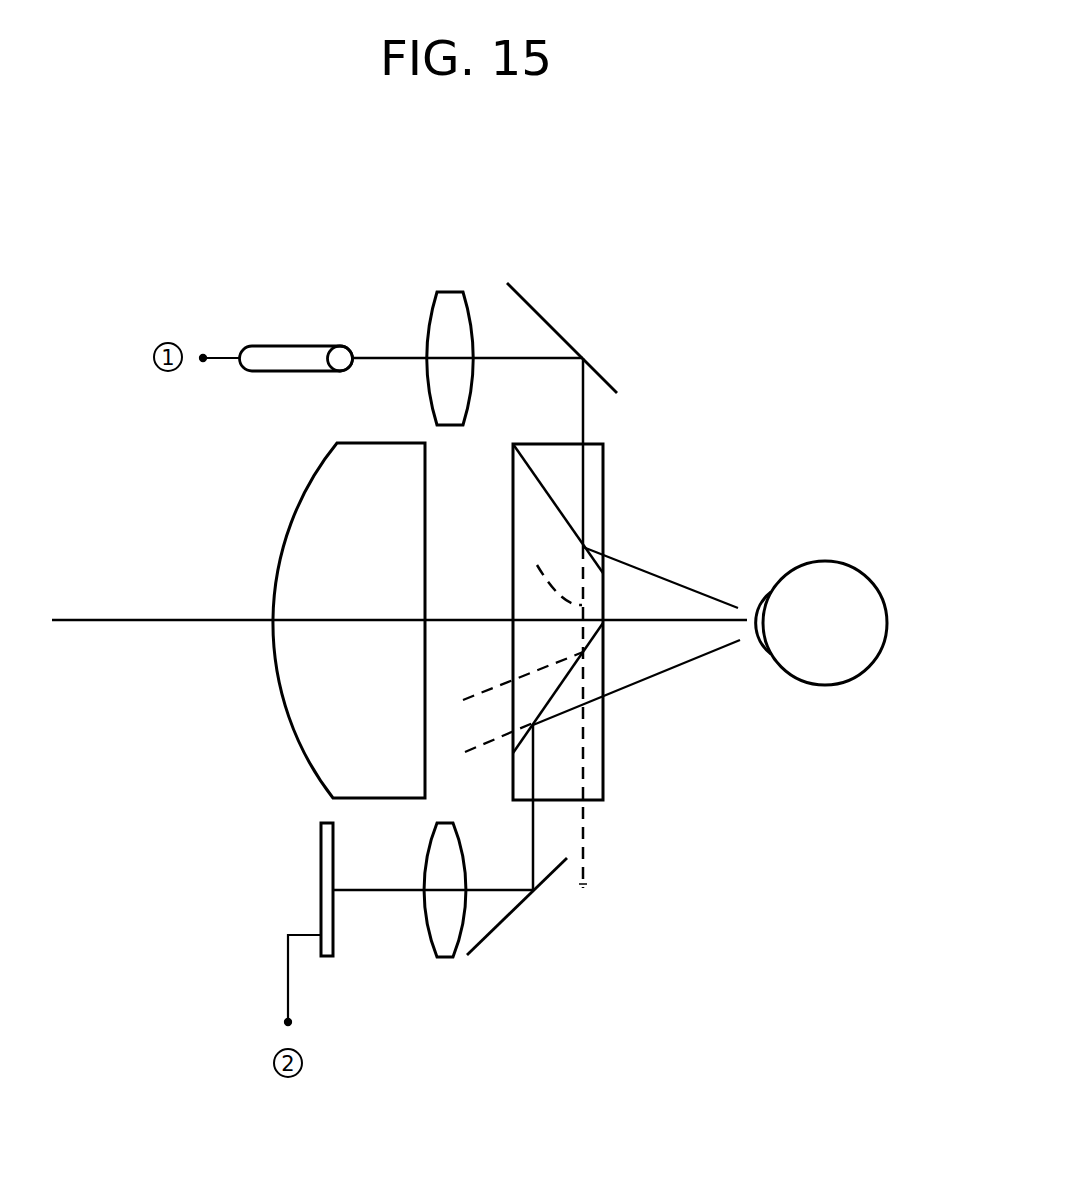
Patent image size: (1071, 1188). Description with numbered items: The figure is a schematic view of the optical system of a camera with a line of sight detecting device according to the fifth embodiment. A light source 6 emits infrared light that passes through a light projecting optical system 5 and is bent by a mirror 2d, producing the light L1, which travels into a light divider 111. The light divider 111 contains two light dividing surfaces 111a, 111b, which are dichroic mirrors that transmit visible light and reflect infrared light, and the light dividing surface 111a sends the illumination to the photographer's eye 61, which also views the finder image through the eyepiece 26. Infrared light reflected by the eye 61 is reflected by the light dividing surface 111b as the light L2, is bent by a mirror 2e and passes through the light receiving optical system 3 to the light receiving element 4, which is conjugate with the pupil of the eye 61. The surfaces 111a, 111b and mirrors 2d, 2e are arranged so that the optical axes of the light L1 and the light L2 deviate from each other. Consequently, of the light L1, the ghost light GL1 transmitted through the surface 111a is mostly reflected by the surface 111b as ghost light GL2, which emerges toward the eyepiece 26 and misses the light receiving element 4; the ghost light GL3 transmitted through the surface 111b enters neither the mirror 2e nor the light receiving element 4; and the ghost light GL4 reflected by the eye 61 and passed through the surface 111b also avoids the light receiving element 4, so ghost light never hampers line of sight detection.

The light source 6 is at (298, 345).
The light projecting optical system 5 is at (450, 292).
The mirror 2d is at (547, 320).
The light L1 is at (585, 472).
The ghost light GL3 is at (585, 885).
The light divider 111 is at (605, 743).
The light dividing surface 111a is at (543, 488).
The light dividing surface 111b is at (540, 710).
The ghost light GL1 is at (550, 571).
The ghost light GL2 is at (470, 698).
The ghost light GL4 is at (477, 753).
The light L2 is at (533, 860).
The eyepiece 26 is at (282, 697).
The eye 61 is at (857, 570).
The mirror 2e is at (500, 932).
The light receiving optical system 3 is at (445, 958).
The light receiving element 4 is at (327, 957).